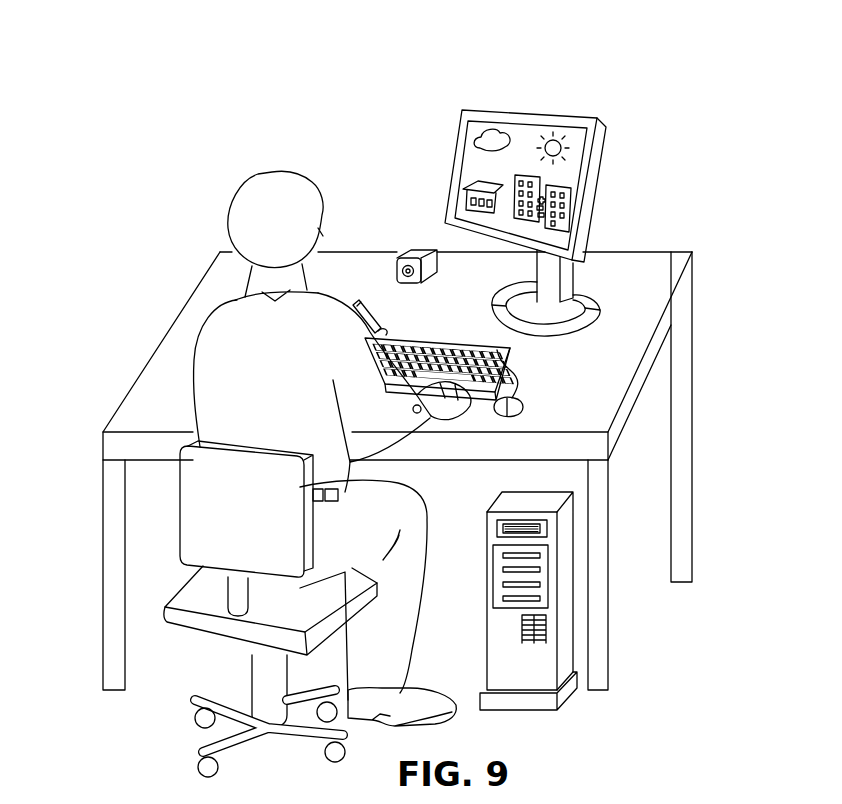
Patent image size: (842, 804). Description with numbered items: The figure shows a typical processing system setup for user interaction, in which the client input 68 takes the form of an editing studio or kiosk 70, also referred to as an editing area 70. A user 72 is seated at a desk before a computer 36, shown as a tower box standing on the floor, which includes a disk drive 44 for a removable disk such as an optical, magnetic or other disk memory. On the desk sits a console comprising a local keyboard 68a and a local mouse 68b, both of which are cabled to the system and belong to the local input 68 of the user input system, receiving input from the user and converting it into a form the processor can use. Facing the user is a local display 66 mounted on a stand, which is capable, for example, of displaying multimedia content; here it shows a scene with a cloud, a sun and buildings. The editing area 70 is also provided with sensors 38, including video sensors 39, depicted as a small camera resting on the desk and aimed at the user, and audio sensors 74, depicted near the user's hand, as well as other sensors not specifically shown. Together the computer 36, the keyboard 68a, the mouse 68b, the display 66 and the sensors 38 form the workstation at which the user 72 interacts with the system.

The editing studio or kiosk 70 is at (658, 52).
The user 72 is at (215, 300).
The local display 66 is at (547, 116).
The client input 68 is at (633, 217).
The local keyboard 68a is at (510, 352).
The local mouse 68b is at (521, 404).
The computer 36 is at (522, 700).
The disk drive 44 is at (470, 548).
The sensors 38 is at (424, 250).
The video sensors 39 is at (399, 258).
The audio sensors 74 is at (364, 300).